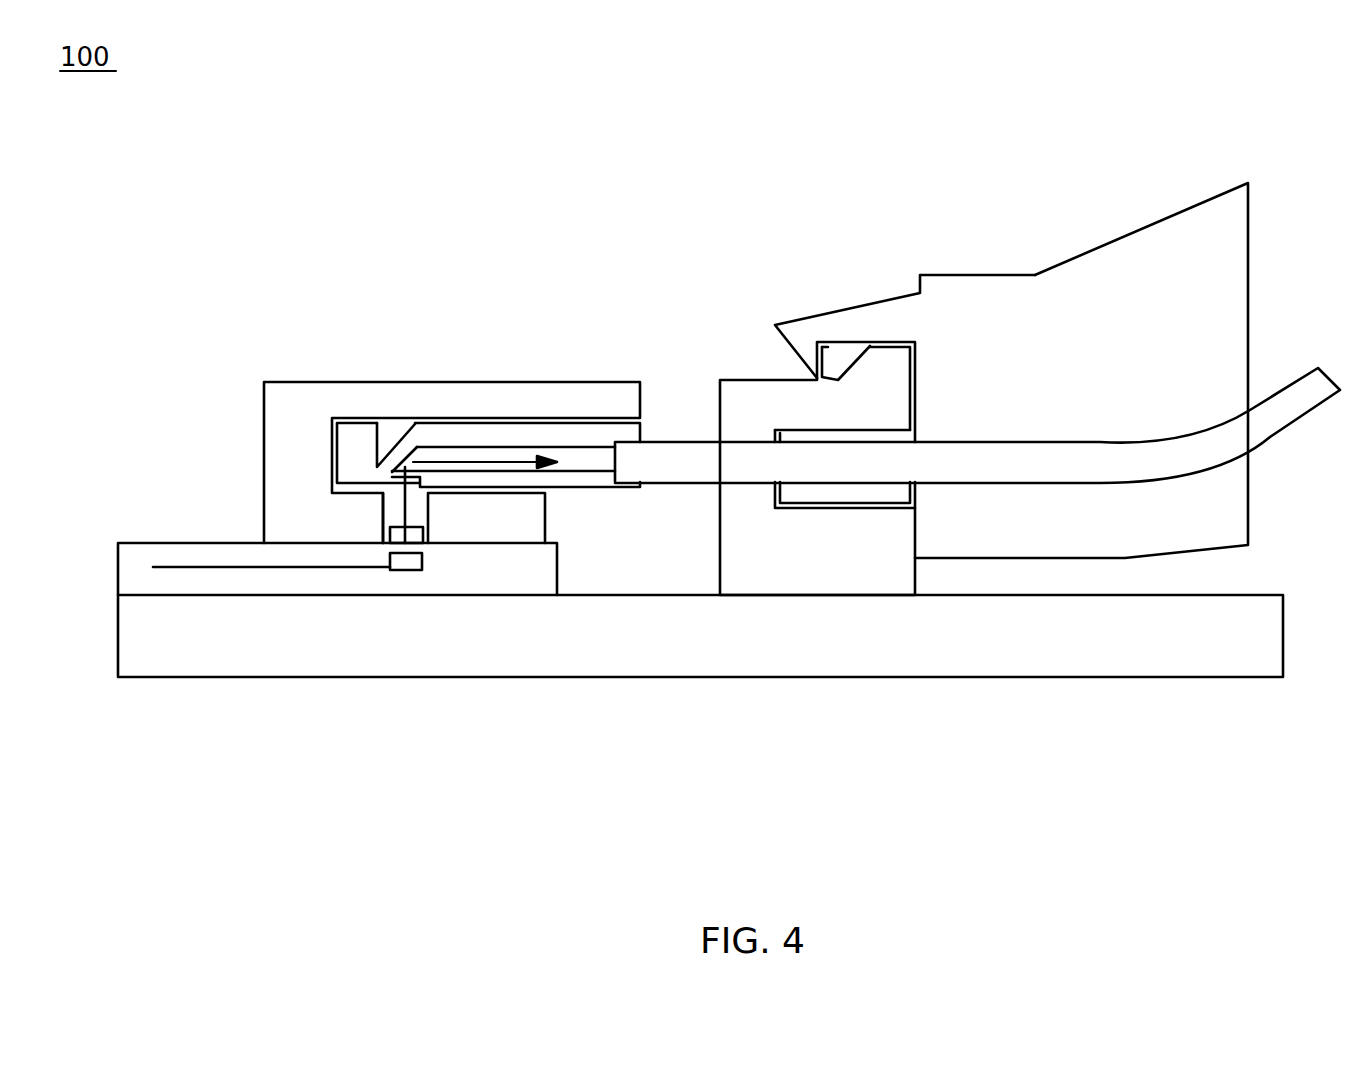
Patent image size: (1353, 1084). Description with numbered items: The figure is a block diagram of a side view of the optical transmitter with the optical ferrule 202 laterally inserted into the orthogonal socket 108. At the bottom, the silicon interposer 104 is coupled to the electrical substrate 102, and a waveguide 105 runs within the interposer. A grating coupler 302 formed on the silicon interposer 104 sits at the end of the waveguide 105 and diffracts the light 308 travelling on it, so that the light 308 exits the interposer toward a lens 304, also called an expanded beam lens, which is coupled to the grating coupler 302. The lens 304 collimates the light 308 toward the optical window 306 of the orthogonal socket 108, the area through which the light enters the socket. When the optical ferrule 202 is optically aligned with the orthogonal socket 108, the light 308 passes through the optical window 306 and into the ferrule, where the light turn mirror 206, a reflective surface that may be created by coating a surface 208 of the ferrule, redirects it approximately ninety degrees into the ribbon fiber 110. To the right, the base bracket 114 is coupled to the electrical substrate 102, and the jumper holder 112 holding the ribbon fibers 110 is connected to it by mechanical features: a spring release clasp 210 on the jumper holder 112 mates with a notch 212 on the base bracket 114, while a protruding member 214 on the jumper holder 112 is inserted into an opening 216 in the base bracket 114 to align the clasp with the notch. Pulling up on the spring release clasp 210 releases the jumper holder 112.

The electrical substrate 102 is at (724, 647).
The silicon interposer 104 is at (155, 543).
The waveguide 105 is at (243, 567).
The orthogonal socket 108 is at (540, 382).
The ribbon fiber 110 is at (682, 442).
The jumper holder 112 is at (1108, 240).
The base bracket 114 is at (840, 564).
The optical ferrule 202 is at (643, 440).
The light turn mirror 206 is at (403, 460).
The surface 208 is at (398, 447).
The spring release clasp 210 is at (963, 273).
The notch 212 is at (870, 346).
The protruding member 214 is at (800, 430).
The opening 216 is at (777, 430).
The grating coupler 302 is at (407, 571).
The lens 304 is at (387, 539).
The optical window 306 is at (415, 507).
The light 308 is at (390, 533).